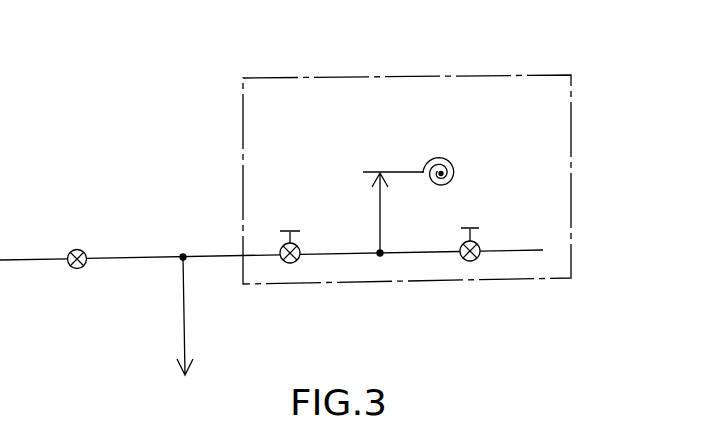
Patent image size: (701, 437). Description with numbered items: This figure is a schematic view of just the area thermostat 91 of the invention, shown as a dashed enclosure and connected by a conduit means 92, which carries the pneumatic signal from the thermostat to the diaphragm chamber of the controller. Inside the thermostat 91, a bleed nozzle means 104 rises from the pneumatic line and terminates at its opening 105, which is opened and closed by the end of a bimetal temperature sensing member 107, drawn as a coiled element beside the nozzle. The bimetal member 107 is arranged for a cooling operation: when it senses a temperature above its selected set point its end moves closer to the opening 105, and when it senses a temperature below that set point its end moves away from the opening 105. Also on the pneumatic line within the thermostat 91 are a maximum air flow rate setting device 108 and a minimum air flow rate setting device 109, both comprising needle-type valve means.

The area thermostat 91 is at (507, 60).
The conduit means 92 is at (182, 315).
The bleed nozzle means 104 is at (378, 208).
The opening 105 is at (373, 175).
The bimetal temperature sensing member 107 is at (402, 172).
The maximum air flow rate setting device 108 is at (498, 230).
The minimum air flow rate setting device 109 is at (272, 233).